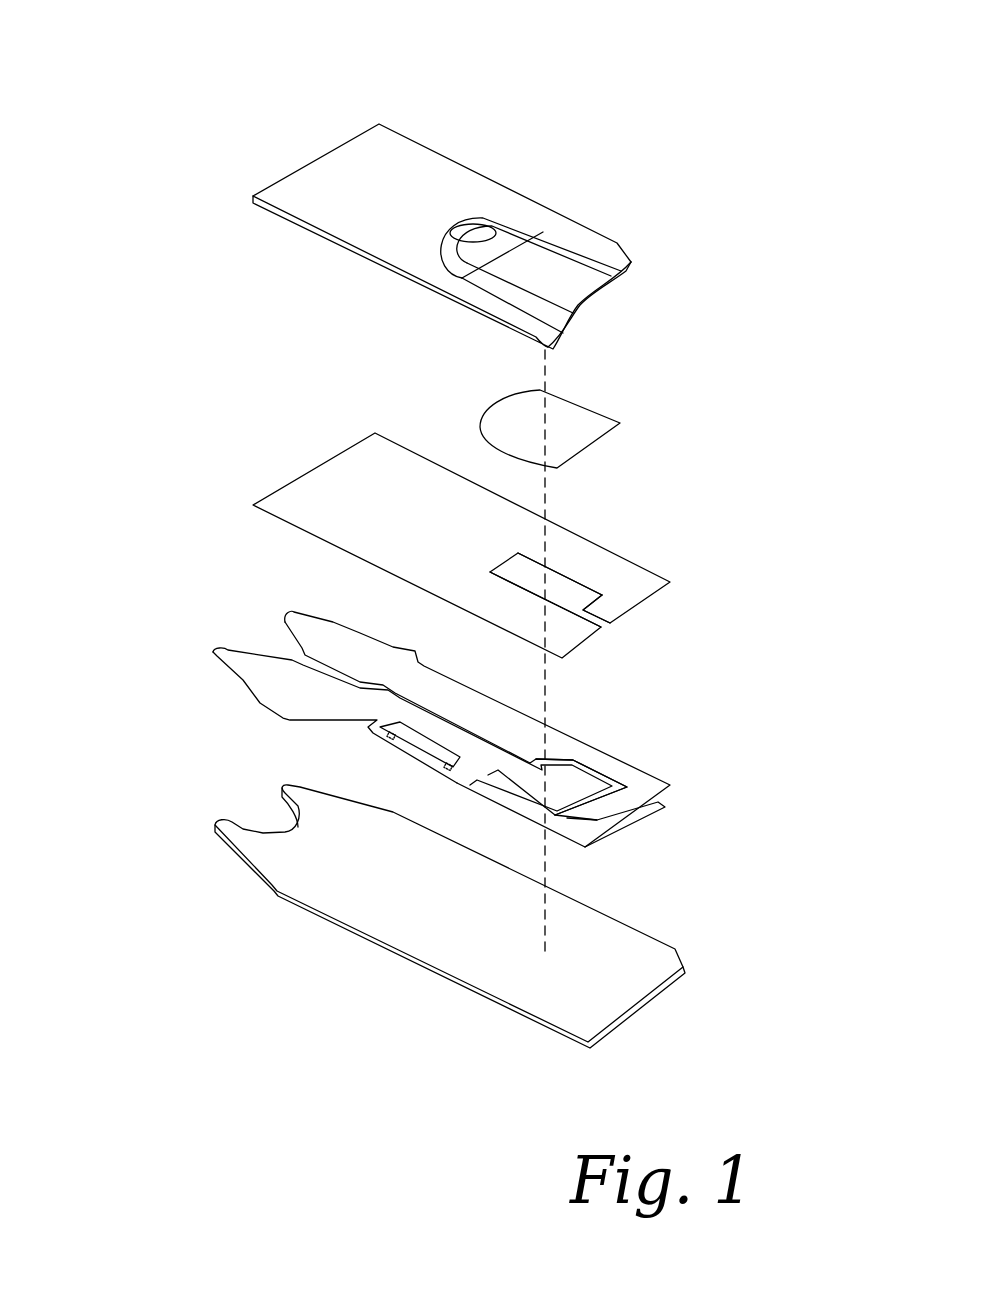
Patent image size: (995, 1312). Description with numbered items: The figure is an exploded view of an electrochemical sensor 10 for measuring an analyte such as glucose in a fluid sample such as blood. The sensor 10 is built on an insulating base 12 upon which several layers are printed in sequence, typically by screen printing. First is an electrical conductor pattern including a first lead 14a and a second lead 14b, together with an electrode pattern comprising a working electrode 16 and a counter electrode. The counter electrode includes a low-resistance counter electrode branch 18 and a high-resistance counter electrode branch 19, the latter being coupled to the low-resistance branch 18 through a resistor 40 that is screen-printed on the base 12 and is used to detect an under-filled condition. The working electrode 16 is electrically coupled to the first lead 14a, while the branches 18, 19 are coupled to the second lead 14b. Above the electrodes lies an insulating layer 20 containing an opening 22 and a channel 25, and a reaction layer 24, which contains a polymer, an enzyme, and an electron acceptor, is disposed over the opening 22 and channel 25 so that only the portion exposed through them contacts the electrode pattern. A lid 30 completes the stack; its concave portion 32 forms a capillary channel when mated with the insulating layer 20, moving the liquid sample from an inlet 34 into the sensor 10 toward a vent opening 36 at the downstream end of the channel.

The electrochemical sensor 10 is at (98, 72).
The insulating base 12 is at (677, 960).
The first lead 14a is at (288, 618).
The second lead 14b is at (222, 652).
The working electrode 16 is at (597, 820).
The low-resistance counter electrode branch 18 is at (578, 787).
The high-resistance counter electrode branch 19 is at (643, 813).
The insulating layer 20 is at (340, 468).
The opening 22 is at (583, 590).
The reaction layer 24 is at (582, 440).
The channel 25 is at (617, 637).
The lid 30 is at (303, 181).
The concave portion 32 is at (575, 308).
The inlet 34 is at (628, 297).
The opening 36 is at (465, 232).
The resistor 40 is at (417, 753).